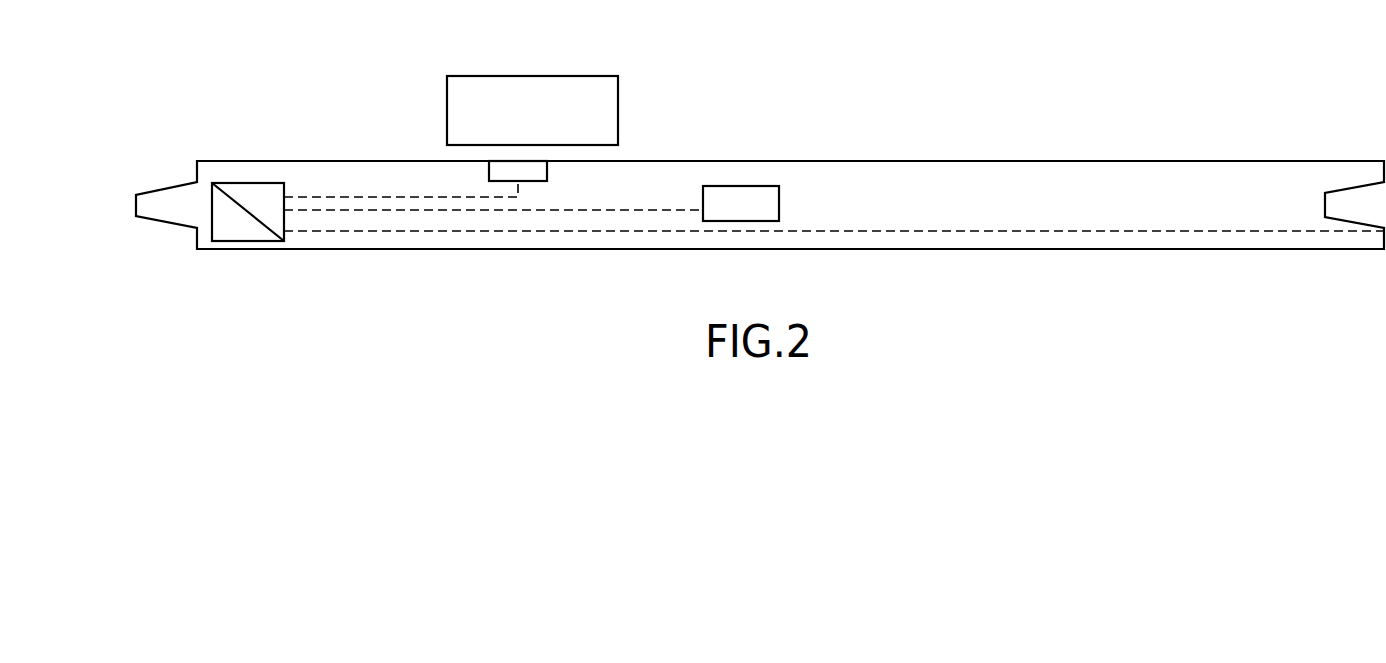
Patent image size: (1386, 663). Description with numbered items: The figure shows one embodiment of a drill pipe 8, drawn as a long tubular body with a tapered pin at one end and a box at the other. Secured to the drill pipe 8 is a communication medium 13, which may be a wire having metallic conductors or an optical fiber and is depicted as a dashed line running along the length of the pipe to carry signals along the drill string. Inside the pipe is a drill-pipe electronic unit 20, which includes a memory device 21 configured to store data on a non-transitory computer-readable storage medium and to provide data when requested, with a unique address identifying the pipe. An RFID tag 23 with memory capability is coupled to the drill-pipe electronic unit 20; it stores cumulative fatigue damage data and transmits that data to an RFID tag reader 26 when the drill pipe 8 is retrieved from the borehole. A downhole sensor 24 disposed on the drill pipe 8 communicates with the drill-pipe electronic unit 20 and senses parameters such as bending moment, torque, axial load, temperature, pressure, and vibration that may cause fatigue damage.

The drill pipe 8 is at (791, 162).
The communication medium 13 is at (1025, 230).
The drill-pipe electronic unit 20 is at (292, 177).
The memory device 21 is at (350, 238).
The RFID tag 23 is at (498, 173).
The sensor 24 is at (740, 208).
The RFID tag reader 26 is at (612, 138).